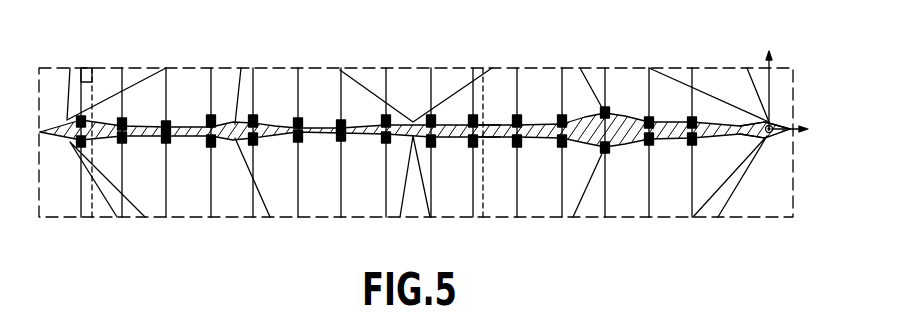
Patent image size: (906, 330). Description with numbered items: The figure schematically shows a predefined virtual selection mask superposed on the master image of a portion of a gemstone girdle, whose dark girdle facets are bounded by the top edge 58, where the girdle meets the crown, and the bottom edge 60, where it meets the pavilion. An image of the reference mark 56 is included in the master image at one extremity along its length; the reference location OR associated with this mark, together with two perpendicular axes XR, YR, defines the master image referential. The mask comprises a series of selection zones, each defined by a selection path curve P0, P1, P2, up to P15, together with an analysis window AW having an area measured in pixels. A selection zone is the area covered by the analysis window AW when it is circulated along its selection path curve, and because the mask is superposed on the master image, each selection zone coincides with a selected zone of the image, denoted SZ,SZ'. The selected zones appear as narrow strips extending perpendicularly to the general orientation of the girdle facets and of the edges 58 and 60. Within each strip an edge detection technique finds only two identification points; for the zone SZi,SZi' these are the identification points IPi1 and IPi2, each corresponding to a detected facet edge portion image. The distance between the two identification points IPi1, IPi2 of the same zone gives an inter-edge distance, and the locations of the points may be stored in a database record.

The selection path curve P0 is at (80, 88).
The analysis window AW is at (86, 69).
The selection path curve P1 is at (124, 78).
The selection path curve P2 is at (167, 75).
The selection path curve P15 is at (693, 78).
The top edge of the girdle 58 is at (366, 124).
The bottom edge of the girdle 60 is at (360, 141).
The reference mark 56 is at (757, 137).
The identification point IPi1 is at (487, 122).
The identification point IPi2 is at (486, 140).
The selection zone and selected zone SZi,SZi' is at (460, 160).
The selection zone and selected zone SZ,SZ' is at (90, 166).
The reference axis YR is at (766, 80).
The reference axis XR is at (801, 142).
The reference location OR is at (774, 118).